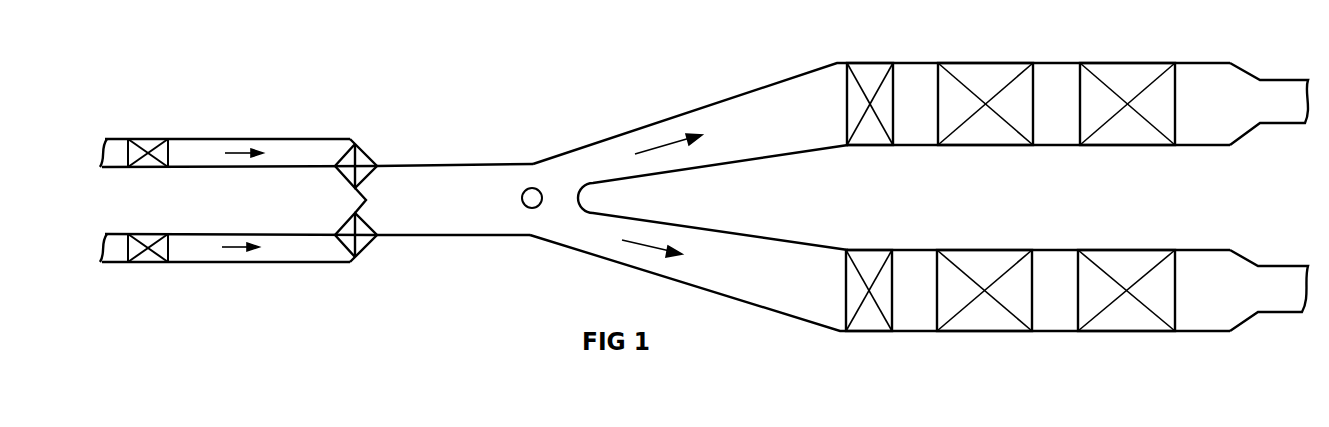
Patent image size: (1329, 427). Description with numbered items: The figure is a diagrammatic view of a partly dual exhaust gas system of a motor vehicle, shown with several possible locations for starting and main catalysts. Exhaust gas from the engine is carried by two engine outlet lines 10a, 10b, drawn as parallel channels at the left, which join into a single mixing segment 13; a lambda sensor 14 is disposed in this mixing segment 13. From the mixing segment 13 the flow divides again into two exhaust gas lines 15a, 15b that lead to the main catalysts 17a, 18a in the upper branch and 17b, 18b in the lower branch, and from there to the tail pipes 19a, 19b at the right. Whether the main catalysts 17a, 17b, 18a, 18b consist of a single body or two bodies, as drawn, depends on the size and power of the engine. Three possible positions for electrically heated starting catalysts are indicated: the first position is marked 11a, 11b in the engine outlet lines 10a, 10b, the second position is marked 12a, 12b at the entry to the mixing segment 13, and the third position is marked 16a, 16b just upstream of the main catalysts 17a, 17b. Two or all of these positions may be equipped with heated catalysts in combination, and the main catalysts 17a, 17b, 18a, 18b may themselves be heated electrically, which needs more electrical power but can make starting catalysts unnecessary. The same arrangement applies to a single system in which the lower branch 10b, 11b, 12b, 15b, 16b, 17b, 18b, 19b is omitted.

The engine outlet line 10a is at (120, 138).
The engine outlet line 10b is at (115, 255).
The electrically heated starting catalyst (position 1) 11a is at (155, 142).
The electrically heated starting catalyst (position 1) 11b is at (155, 257).
The electrically heated starting catalyst (position 2) 12a is at (365, 153).
The electrically heated starting catalyst (position 2) 12b is at (368, 243).
The mixing segment 13 is at (447, 213).
The lambda sensor 14 is at (529, 188).
The exhaust gas line 15a is at (675, 127).
The exhaust gas line 15b is at (737, 242).
The electrically heated starting catalyst (position 3) 16a is at (868, 133).
The electrically heated starting catalyst (position 3) 16b is at (868, 255).
The main catalyst 17a is at (975, 135).
The main catalyst 17b is at (973, 260).
The main catalyst 18a is at (1120, 127).
The main catalyst 18b is at (1117, 257).
The tail pipe 19a is at (1285, 78).
The tail pipe 19b is at (1275, 268).